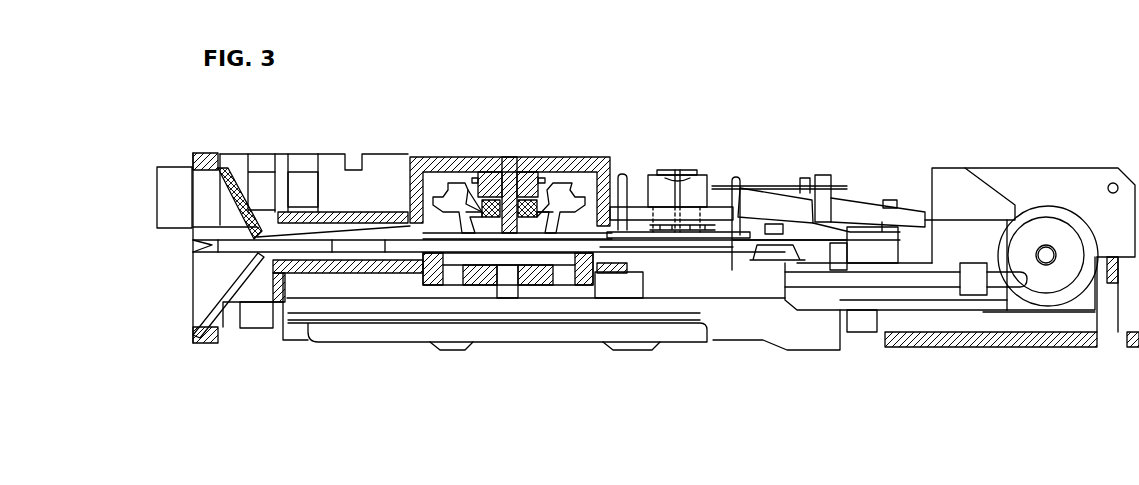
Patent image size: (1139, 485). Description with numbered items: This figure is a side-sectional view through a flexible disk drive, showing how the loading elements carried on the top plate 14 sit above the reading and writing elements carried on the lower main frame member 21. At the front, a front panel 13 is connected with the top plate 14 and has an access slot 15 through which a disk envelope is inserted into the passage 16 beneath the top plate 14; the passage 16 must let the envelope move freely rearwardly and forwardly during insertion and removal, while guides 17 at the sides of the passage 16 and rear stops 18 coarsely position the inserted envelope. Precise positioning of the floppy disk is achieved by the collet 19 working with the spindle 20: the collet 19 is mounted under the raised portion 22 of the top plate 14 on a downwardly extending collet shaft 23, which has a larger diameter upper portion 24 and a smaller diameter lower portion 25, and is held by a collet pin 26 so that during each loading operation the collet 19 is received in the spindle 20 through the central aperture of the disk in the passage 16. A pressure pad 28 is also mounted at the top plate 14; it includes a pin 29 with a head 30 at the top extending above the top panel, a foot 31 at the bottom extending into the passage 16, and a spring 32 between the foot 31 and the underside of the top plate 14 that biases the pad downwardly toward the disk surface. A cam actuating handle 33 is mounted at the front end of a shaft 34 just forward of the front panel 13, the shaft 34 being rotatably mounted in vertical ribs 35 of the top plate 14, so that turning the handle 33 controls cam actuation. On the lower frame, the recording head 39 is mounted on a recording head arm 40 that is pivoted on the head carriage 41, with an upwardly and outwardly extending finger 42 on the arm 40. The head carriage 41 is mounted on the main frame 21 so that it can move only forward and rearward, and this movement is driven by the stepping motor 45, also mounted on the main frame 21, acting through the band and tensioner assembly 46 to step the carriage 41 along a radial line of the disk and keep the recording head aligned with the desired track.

The front panel 13 is at (193, 336).
The top plate 14 is at (395, 217).
The access slot 15 is at (210, 245).
The passage 16 is at (273, 252).
The guides 17 is at (388, 247).
The rear stops 18 is at (837, 254).
The collet 19 is at (553, 192).
The spindle 20 is at (538, 277).
The main frame member 21 is at (810, 340).
The raised portion 22 is at (435, 160).
The collet shaft 23 is at (500, 203).
The upper portion 24 is at (510, 170).
The lower portion 25 is at (473, 226).
The collet pin 26 is at (530, 193).
The pressure pad 28 is at (663, 170).
The pin 29 is at (678, 190).
The head 30 is at (678, 170).
The foot 31 is at (723, 236).
The spring 32 is at (650, 228).
The cam actuating handle 33 is at (172, 180).
The shaft 34 is at (308, 177).
The vertical ribs 35 is at (282, 170).
The recording head 39 is at (775, 227).
The recording head arm 40 is at (743, 202).
The head carriage 41 is at (948, 183).
The finger 42 is at (827, 182).
The stepping motor 45 is at (1055, 182).
The band and tensioner assembly 46 is at (1018, 300).